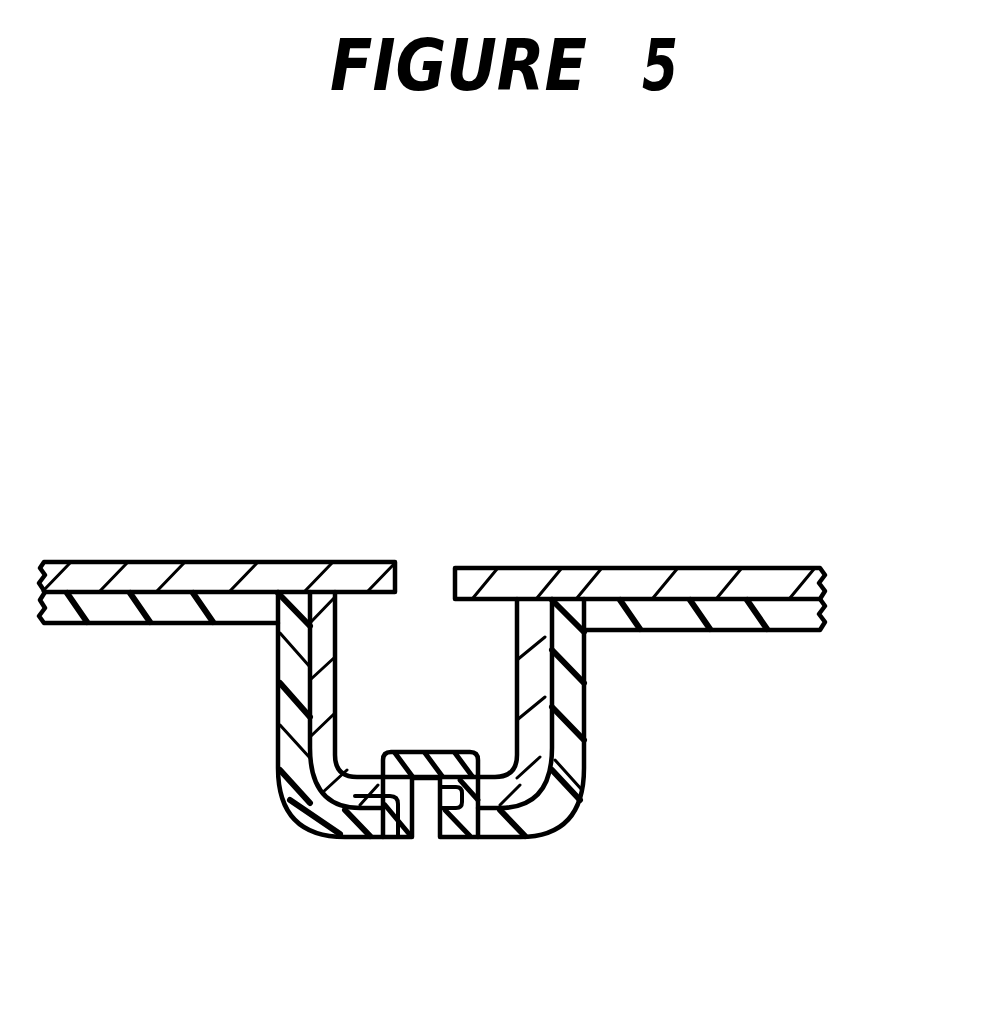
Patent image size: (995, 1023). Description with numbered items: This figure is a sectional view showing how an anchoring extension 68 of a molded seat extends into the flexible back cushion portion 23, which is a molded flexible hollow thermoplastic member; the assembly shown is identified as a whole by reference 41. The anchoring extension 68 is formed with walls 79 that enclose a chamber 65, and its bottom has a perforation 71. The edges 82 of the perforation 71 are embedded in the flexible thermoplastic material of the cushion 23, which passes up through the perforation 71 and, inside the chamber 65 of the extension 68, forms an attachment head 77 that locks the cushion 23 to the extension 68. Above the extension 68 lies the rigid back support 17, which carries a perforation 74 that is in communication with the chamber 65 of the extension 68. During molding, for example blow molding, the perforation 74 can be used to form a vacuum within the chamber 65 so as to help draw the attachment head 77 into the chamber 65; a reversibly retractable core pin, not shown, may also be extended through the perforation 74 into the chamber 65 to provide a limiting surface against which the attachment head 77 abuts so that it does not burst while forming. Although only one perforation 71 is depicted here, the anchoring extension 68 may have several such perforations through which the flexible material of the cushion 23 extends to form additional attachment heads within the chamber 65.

The rigid back support 17 is at (212, 570).
The flexible back cushion portion 23 is at (128, 614).
The joint assembly 41 is at (660, 999).
The chamber 65 is at (462, 666).
The anchoring extension 68 is at (572, 698).
The perforation 71 is at (418, 845).
The perforation 74 is at (424, 563).
The attachment head 77 is at (428, 756).
The walls 79 is at (320, 714).
The edges 82 is at (376, 836).